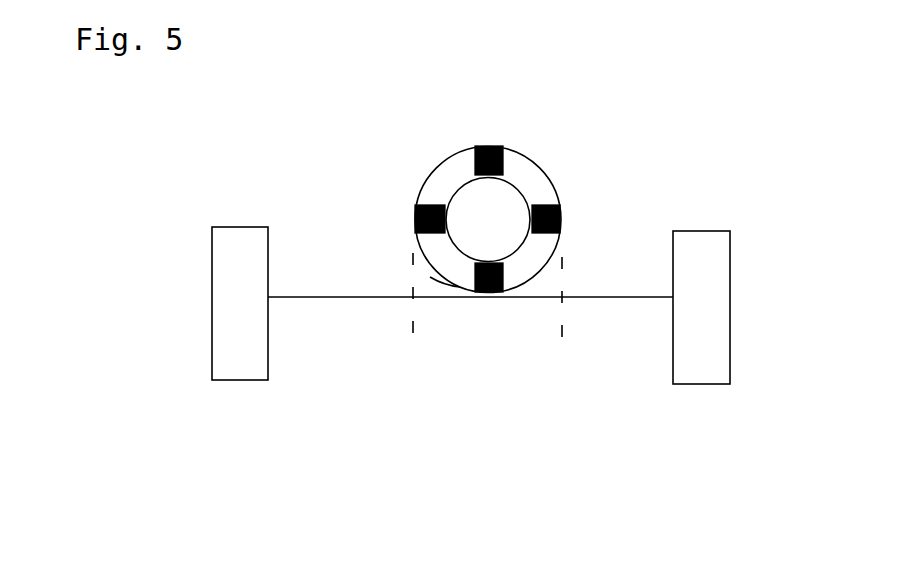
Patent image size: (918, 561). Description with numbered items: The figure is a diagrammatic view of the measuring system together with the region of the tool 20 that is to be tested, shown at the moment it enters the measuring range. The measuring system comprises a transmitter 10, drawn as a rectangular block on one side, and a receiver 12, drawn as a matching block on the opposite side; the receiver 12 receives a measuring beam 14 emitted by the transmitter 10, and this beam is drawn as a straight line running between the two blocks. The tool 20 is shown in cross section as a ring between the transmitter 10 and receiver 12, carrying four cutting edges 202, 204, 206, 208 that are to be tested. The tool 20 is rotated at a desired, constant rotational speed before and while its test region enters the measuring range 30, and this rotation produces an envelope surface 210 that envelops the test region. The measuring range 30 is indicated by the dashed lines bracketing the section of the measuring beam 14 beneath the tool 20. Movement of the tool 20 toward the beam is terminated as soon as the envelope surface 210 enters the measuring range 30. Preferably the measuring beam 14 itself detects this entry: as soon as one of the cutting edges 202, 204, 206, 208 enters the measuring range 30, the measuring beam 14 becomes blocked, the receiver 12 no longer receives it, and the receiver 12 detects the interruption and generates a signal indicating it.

The transmitter 10 is at (707, 229).
The receiver 12 is at (237, 227).
The measuring beam 14 is at (577, 300).
The tool 20 is at (488, 210).
The measuring range 30 is at (482, 330).
The cutting edge 202 is at (492, 145).
The cutting edge 204 is at (562, 217).
The cutting edge 206 is at (493, 298).
The cutting edge 208 is at (415, 215).
The envelope surface 210 is at (450, 282).